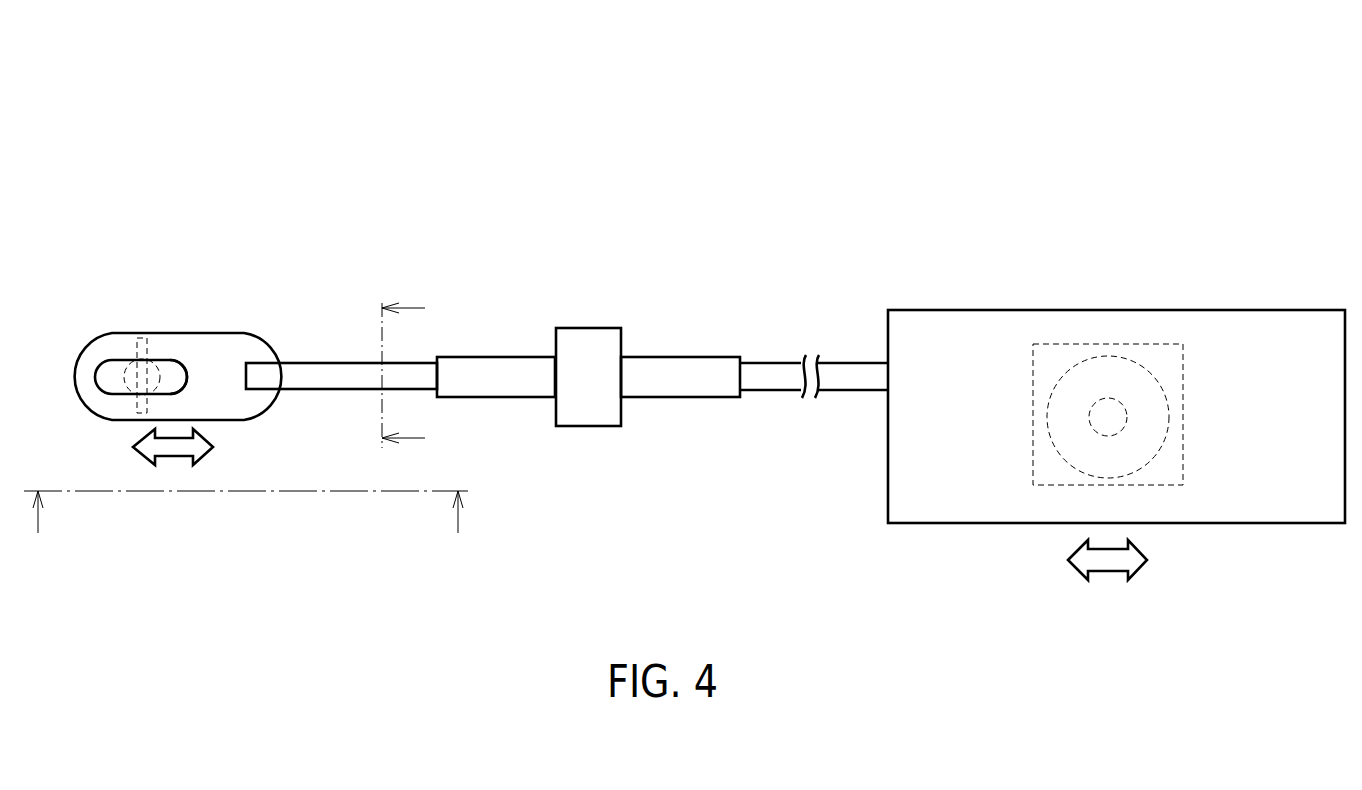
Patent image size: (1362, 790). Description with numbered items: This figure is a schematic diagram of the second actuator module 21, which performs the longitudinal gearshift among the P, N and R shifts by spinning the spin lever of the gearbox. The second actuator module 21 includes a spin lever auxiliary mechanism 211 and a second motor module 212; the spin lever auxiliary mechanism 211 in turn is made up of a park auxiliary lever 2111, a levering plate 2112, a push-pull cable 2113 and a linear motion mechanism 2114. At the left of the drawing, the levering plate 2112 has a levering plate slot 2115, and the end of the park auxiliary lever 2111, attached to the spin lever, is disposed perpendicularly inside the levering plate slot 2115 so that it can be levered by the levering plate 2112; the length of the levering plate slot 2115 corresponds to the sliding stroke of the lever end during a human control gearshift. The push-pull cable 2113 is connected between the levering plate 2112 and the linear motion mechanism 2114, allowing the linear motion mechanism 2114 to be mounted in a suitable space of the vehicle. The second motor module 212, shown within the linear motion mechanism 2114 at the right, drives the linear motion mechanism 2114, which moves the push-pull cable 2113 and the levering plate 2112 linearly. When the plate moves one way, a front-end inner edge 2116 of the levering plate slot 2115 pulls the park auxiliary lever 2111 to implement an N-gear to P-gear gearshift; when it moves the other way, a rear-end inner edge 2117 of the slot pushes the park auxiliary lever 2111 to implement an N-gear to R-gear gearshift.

The second actuator module 21 is at (152, 83).
The spin lever auxiliary mechanism 211 is at (915, 255).
The park auxiliary lever 2111 is at (122, 375).
The levering plate 2112 is at (228, 340).
The push-pull cable 2113 is at (325, 368).
The linear motion mechanism 2114 is at (938, 320).
The levering plate slot 2115 is at (170, 370).
The front-end inner edge 2116 is at (97, 381).
The rear-end inner edge 2117 is at (188, 377).
The second motor module 212 is at (1108, 345).